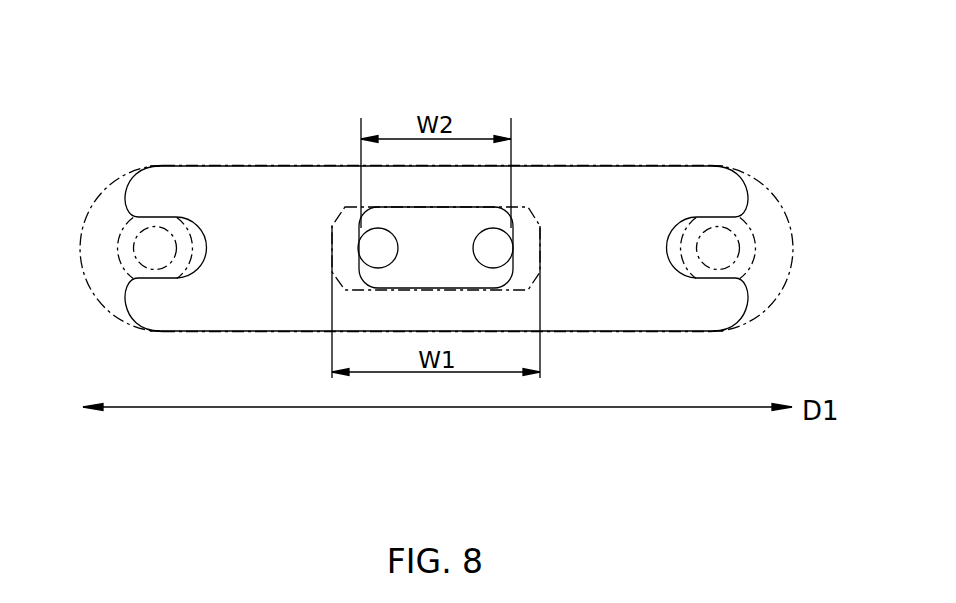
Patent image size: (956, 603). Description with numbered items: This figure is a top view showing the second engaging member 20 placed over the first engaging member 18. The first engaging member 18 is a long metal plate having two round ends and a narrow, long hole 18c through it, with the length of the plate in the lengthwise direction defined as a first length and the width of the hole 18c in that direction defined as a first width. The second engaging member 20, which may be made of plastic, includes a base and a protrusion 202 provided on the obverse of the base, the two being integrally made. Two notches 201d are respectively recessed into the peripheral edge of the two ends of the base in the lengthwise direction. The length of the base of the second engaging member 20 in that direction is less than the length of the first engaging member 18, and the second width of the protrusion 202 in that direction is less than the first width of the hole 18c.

The first engaging member 18 is at (762, 162).
The hole 18c is at (535, 217).
The second engaging member 20 is at (587, 172).
The notch 201d is at (198, 248).
The protrusion 202 is at (372, 276).